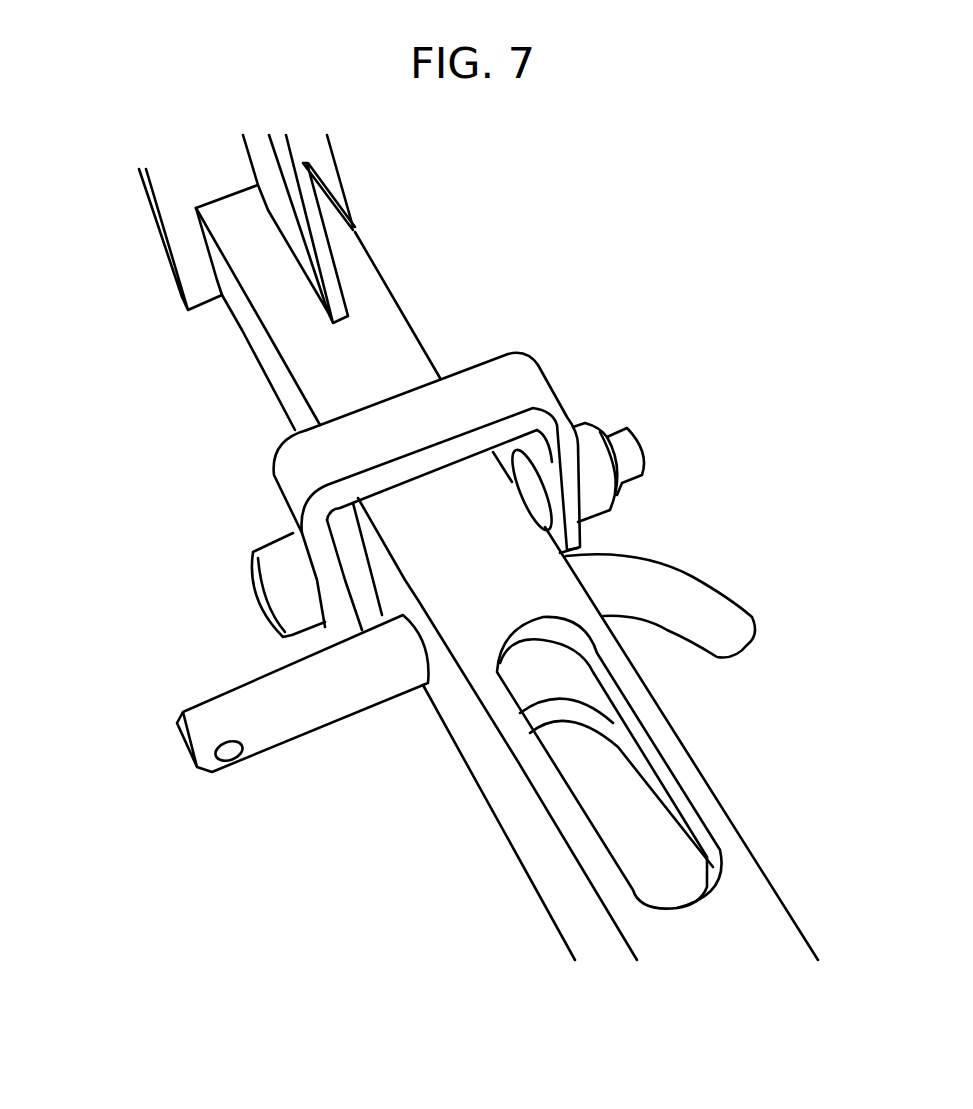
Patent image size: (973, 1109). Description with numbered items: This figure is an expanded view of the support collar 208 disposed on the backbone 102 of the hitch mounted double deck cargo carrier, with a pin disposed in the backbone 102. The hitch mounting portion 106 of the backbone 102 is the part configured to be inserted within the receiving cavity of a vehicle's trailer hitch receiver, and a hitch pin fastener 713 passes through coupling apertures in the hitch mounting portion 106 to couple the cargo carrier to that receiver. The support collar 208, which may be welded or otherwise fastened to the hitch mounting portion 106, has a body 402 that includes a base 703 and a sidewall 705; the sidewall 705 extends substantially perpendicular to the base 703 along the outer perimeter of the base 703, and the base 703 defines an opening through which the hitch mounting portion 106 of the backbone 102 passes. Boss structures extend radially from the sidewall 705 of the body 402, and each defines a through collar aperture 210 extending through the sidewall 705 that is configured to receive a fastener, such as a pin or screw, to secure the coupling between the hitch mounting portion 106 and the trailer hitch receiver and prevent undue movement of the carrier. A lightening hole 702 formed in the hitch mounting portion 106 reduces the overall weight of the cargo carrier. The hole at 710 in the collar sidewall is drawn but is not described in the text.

The backbone 102 is at (432, 240).
The hitch mounting portion 106 is at (755, 905).
The support collar 208 is at (473, 415).
The collar aperture 210 is at (616, 395).
The body 402 is at (462, 360).
The lightening hole 702 is at (628, 808).
The base 703 is at (342, 528).
The sidewall 705 is at (508, 383).
The hole 710 is at (566, 479).
The hitch pin fastener 713 is at (720, 608).